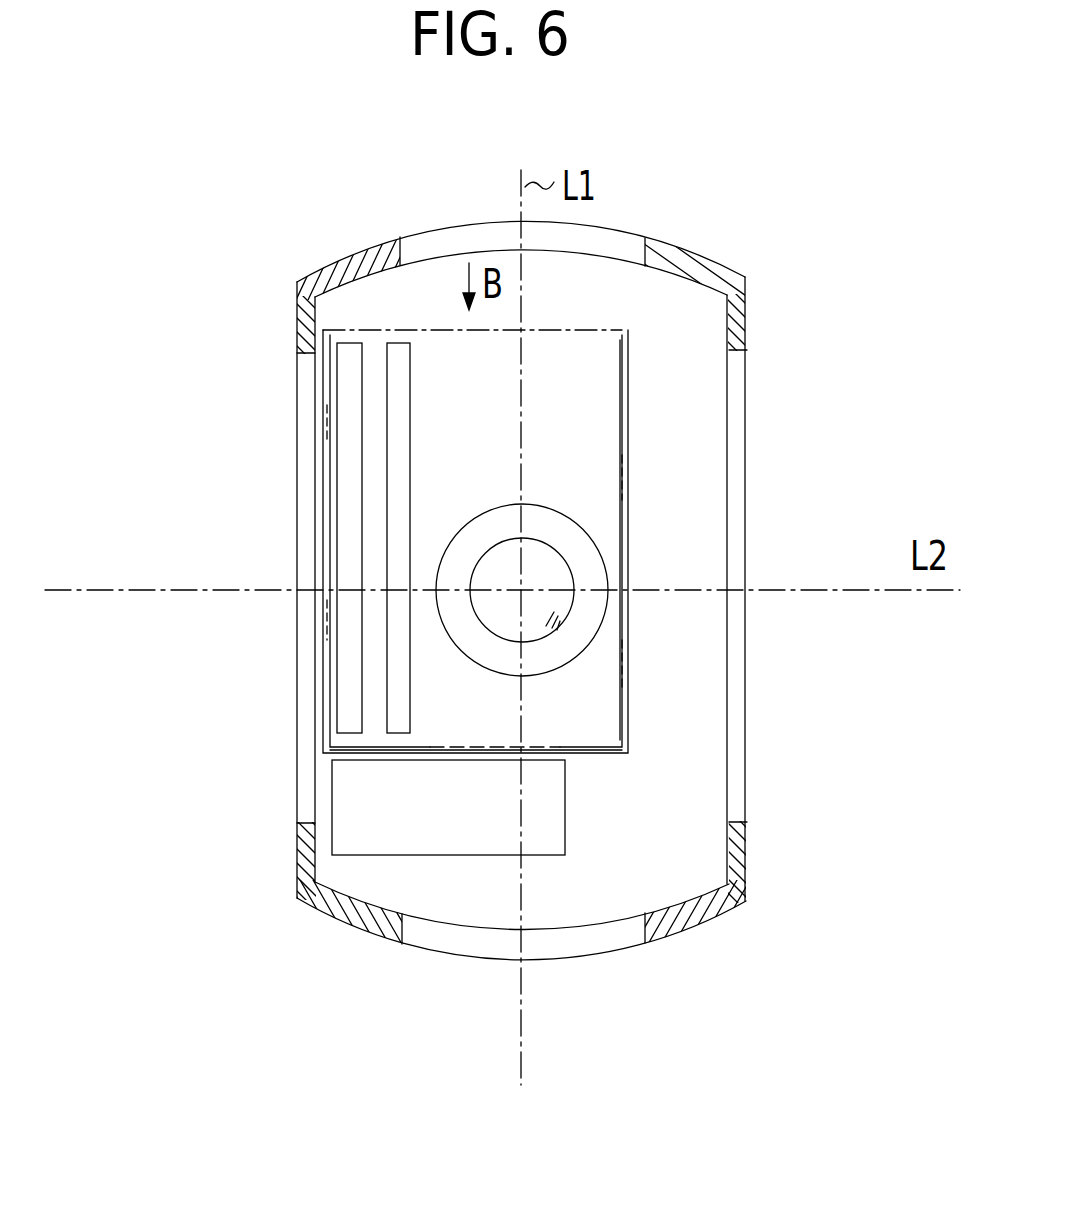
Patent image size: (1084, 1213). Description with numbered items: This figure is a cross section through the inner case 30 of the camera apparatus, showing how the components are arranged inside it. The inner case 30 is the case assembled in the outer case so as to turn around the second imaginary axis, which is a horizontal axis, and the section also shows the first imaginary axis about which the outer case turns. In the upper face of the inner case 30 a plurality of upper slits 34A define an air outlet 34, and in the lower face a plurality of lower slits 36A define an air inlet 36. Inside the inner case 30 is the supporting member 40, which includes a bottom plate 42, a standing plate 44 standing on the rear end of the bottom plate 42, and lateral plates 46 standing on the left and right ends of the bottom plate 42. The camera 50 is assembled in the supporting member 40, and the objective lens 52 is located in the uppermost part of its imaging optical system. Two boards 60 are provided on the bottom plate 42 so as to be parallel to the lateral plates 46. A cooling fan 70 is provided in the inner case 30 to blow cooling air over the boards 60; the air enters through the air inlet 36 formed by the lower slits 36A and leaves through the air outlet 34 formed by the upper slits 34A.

The inner case 30 is at (735, 270).
The air outlet 34 is at (521, 235).
The upper slits 34A is at (400, 252).
The air inlet 36 is at (521, 953).
The lower slits 36A is at (402, 937).
The supporting member 40 is at (521, 487).
The bottom plate 42 is at (603, 754).
The standing plate 44 is at (600, 388).
The lateral plates 46 is at (318, 536).
The camera 50 is at (595, 645).
The objective lens 52 is at (553, 578).
The boards 60 is at (388, 458).
The cooling fan 70 is at (332, 797).